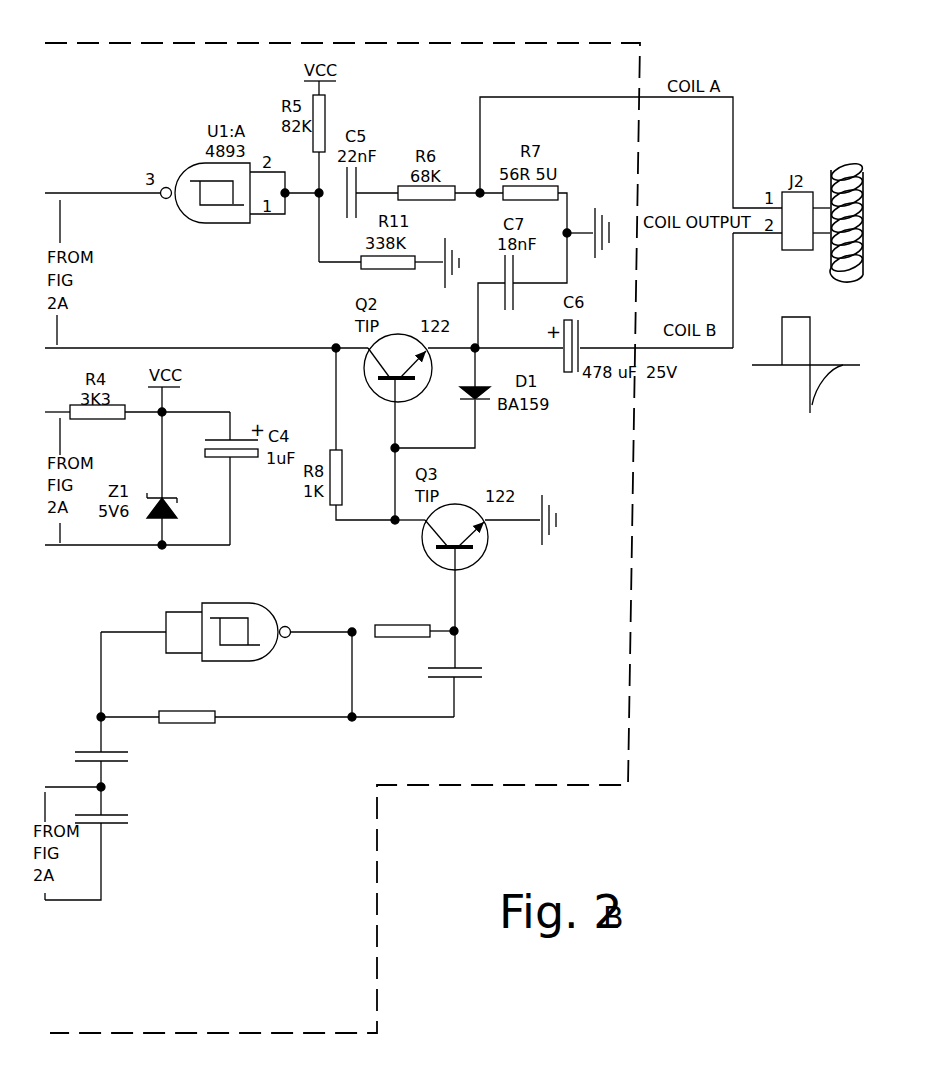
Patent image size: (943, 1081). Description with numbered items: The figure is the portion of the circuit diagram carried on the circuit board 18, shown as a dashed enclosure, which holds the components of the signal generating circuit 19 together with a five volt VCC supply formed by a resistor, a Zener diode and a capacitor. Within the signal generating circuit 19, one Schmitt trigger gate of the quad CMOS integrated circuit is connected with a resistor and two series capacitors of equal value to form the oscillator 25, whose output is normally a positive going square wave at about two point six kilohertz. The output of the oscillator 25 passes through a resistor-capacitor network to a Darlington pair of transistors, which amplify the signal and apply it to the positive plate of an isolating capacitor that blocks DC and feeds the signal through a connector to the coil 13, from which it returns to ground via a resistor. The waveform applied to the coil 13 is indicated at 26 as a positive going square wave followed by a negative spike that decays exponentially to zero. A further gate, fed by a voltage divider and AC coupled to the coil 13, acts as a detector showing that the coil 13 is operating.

The circuit board 18 is at (648, 58).
The coil 13 is at (846, 160).
The signal applied to the coil 26 is at (800, 387).
The oscillator 25 is at (254, 747).
The signal generating circuit 19 is at (193, 917).